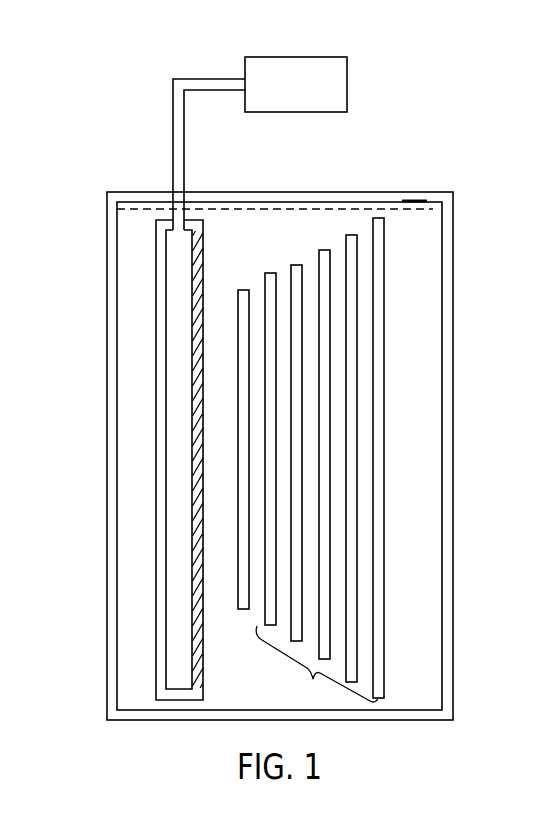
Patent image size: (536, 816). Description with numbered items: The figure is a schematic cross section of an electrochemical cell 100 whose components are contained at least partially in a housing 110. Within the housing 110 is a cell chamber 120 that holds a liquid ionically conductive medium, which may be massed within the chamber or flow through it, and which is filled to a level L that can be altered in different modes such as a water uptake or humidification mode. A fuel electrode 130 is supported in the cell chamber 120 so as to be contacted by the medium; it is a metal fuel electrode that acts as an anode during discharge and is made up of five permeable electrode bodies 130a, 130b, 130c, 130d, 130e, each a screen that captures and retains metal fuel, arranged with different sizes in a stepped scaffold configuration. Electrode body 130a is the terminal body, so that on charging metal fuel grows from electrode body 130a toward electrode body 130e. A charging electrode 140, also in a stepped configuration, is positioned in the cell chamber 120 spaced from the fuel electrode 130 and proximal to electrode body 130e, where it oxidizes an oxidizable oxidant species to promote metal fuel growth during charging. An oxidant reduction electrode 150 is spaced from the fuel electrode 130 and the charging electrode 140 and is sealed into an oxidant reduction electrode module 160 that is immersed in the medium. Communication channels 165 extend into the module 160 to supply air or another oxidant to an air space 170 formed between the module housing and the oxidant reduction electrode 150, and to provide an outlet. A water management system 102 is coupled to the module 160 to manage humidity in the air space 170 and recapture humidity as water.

The electrochemical cell 100 is at (107, 157).
The wafer management system (WMS) 102 is at (335, 56).
The housing 110 is at (308, 196).
The cell chamber 120 is at (232, 689).
The fuel electrode 130 is at (375, 430).
The permeable electrode body 130a is at (378, 230).
The permeable electrode body 130b is at (350, 235).
The permeable electrode body 130c is at (323, 250).
The permeable electrode body 130d is at (294, 265).
The permeable electrode body 130e is at (270, 273).
The charging electrode 140 is at (240, 305).
The oxidant reduction electrode 150 is at (204, 262).
The oxidant reduction electrode module 160 is at (160, 242).
The communication channels 165 is at (178, 213).
The air space 170 is at (178, 270).
The level L is at (433, 204).